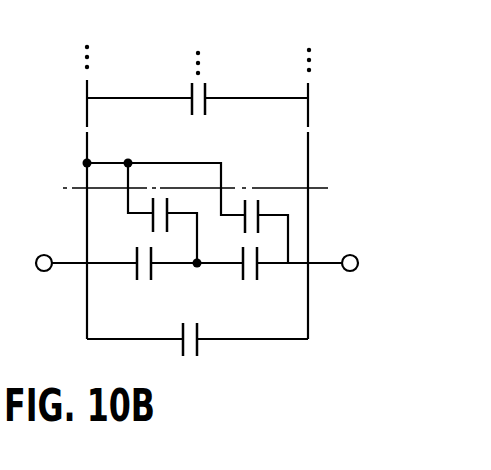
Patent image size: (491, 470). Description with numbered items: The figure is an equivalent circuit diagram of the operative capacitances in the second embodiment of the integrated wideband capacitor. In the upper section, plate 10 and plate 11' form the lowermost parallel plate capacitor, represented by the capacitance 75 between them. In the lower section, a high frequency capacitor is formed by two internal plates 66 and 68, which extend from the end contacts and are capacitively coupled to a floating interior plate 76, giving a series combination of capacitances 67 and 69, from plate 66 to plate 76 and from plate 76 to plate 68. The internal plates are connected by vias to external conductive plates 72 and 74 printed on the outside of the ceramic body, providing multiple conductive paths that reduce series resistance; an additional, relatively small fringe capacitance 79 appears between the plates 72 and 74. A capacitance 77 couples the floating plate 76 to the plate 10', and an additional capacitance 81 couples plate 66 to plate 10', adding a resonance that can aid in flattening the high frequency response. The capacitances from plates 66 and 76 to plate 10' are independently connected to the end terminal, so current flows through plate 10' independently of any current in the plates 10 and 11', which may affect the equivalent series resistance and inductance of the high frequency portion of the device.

The plate 10 is at (139, 78).
The capacitance 75 is at (207, 93).
The plate 11' is at (256, 77).
The plate 10' is at (164, 167).
The capacitance 77 is at (151, 226).
The additional capacitance 81 is at (243, 221).
The internal plate 68 is at (120, 267).
The capacitance 69 is at (153, 272).
The floating interior plate 76 is at (233, 267).
The capacitance 67 is at (260, 273).
The internal plate 66 is at (302, 263).
The external conductive plate 74 is at (97, 340).
The additional capacitance 79 is at (186, 357).
The external conductive plate 72 is at (258, 341).